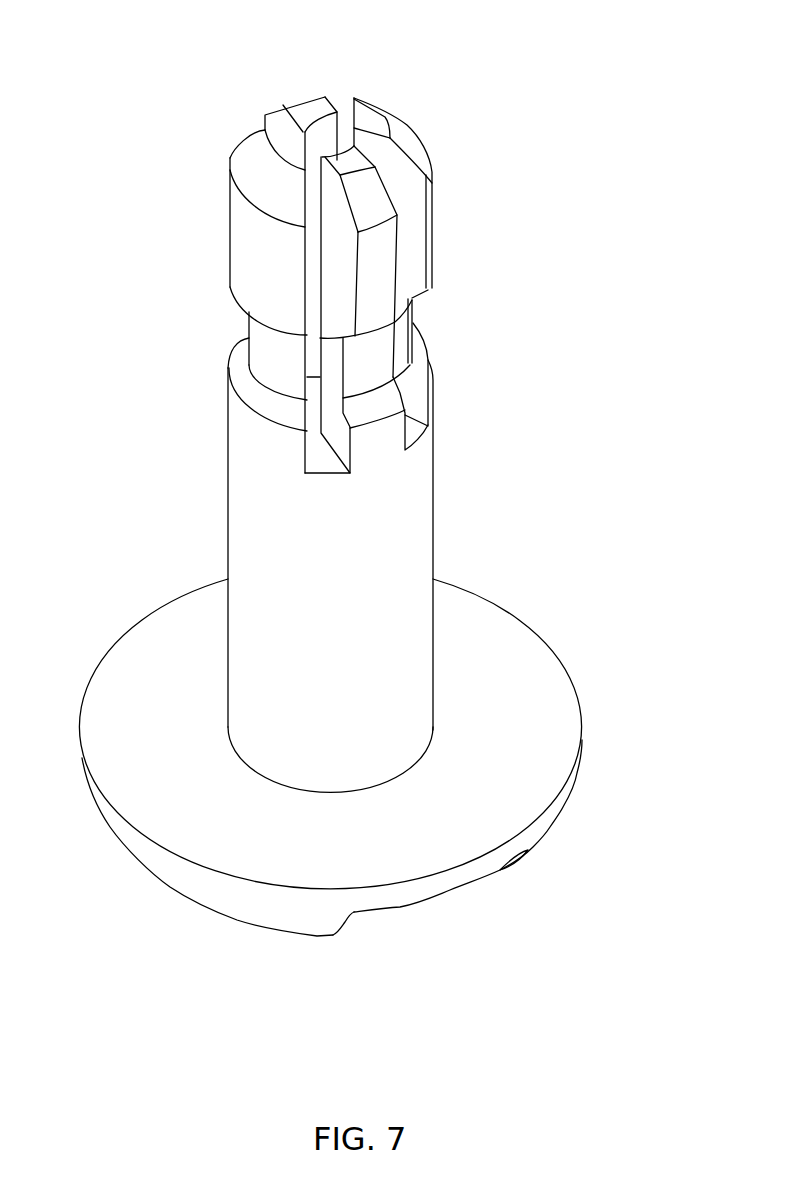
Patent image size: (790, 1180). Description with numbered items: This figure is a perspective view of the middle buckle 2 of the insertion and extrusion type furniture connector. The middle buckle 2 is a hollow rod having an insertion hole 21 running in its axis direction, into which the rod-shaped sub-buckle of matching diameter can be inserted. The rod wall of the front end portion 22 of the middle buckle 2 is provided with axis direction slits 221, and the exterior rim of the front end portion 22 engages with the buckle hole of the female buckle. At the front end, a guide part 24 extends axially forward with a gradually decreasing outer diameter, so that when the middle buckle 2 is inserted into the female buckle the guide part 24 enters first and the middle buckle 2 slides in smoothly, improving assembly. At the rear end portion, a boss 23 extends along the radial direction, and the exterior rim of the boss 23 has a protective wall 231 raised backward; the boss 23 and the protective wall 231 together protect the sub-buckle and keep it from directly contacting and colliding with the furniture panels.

The middle buckle 2 is at (372, 556).
The insertion hole 21 is at (319, 124).
The front end portion 22 is at (432, 211).
The axis direction slits 221 is at (414, 247).
The boss 23 is at (495, 667).
The protective wall 231 is at (275, 894).
The guide part 24 is at (406, 143).